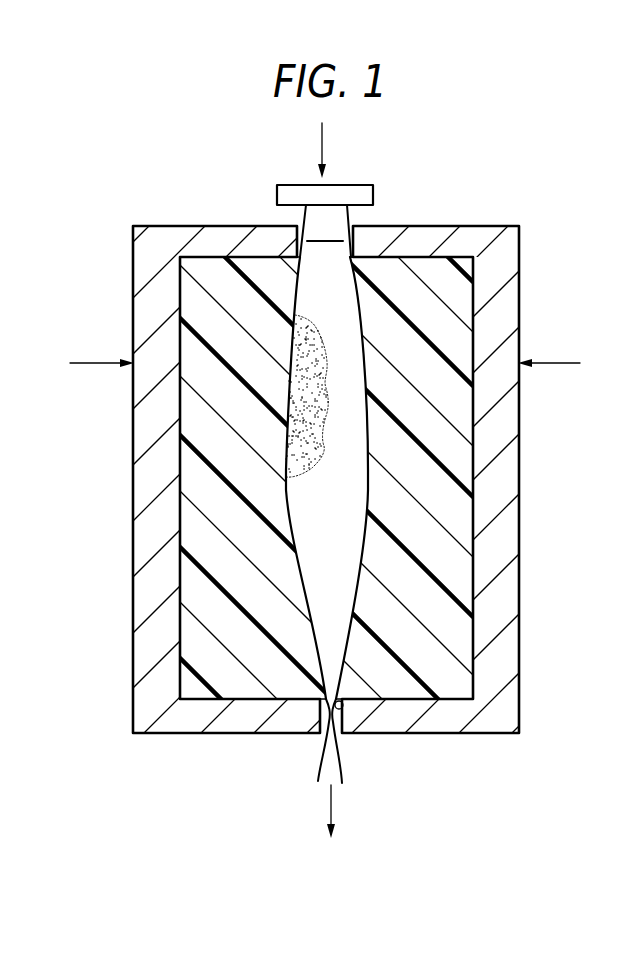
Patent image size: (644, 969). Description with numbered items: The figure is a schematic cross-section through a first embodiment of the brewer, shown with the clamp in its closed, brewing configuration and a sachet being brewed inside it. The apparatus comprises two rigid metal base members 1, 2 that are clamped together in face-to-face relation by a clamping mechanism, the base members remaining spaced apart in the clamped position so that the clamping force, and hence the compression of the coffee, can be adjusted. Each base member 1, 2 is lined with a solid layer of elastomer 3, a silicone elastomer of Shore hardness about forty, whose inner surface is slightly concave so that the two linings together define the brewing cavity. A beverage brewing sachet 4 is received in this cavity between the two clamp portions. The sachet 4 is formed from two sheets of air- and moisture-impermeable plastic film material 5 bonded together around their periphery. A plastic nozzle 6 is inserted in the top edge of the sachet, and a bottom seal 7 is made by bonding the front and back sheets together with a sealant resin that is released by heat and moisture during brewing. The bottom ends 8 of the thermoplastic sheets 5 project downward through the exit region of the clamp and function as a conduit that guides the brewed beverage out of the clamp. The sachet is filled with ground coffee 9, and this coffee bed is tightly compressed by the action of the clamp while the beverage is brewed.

The rigid metal base member 1 is at (172, 233).
The rigid metal base member 2 is at (413, 232).
The solid layer of elastomer 3 is at (447, 284).
The beverage brewing sachet 4 is at (342, 495).
The plastic film material sheets 5 is at (297, 582).
The plastic nozzle 6 is at (366, 186).
The bottom seal 7 is at (342, 703).
The bottom ends of the thermoplastic sheets 8 is at (342, 773).
The ground coffee 9 is at (297, 407).